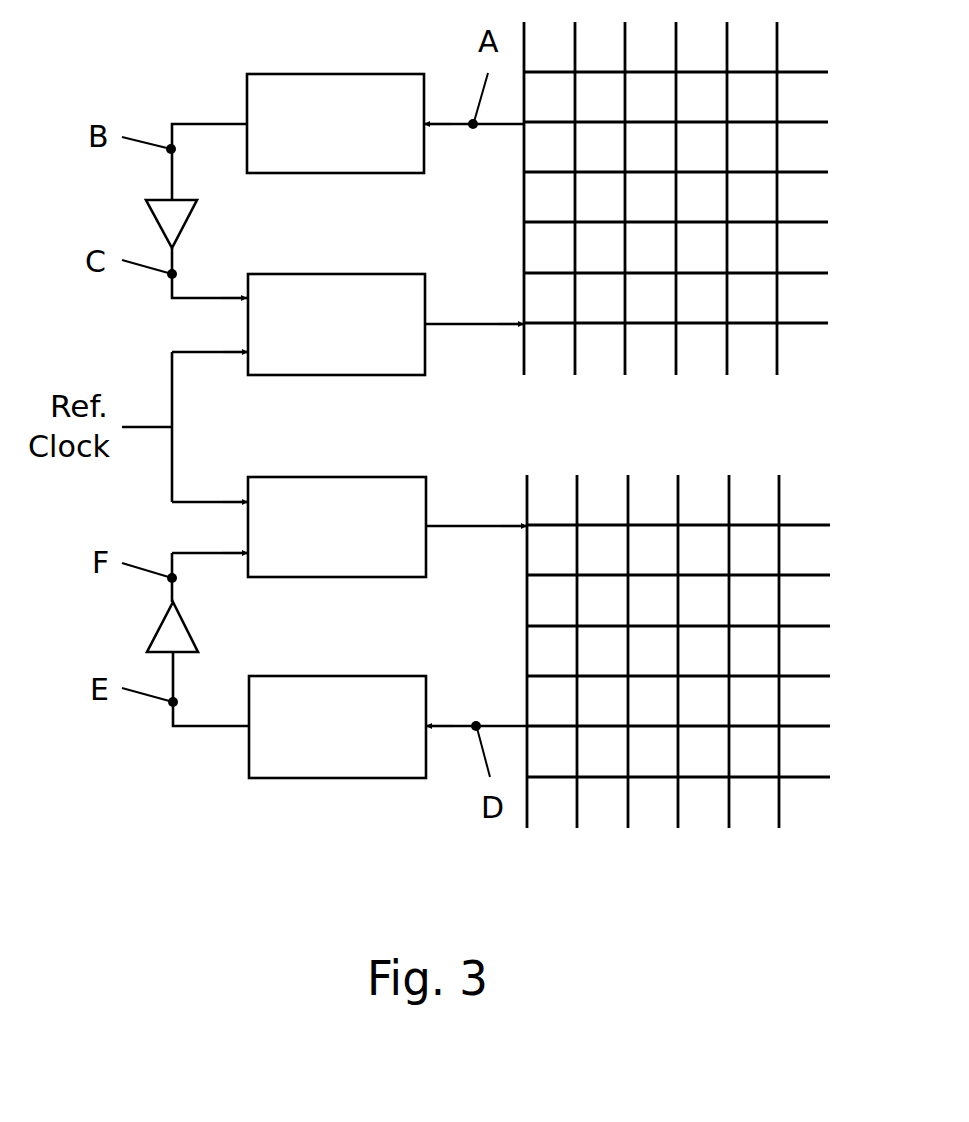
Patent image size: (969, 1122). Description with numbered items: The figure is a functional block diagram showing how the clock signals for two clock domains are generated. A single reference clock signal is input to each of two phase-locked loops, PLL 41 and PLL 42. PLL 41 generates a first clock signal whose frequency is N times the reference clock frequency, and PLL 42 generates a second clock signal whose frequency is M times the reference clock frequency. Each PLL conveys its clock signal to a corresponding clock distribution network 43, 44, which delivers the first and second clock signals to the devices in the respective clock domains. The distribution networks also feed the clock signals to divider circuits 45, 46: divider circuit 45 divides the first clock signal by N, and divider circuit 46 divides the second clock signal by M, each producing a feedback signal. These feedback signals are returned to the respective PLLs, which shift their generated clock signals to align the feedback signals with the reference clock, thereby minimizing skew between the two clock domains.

The PLL 41 is at (350, 273).
The PLL 42 is at (351, 475).
The clock distribution network 43 is at (802, 323).
The clock distribution network 44 is at (805, 777).
The divider circuit 45 is at (348, 73).
The divider circuit 46 is at (353, 674).